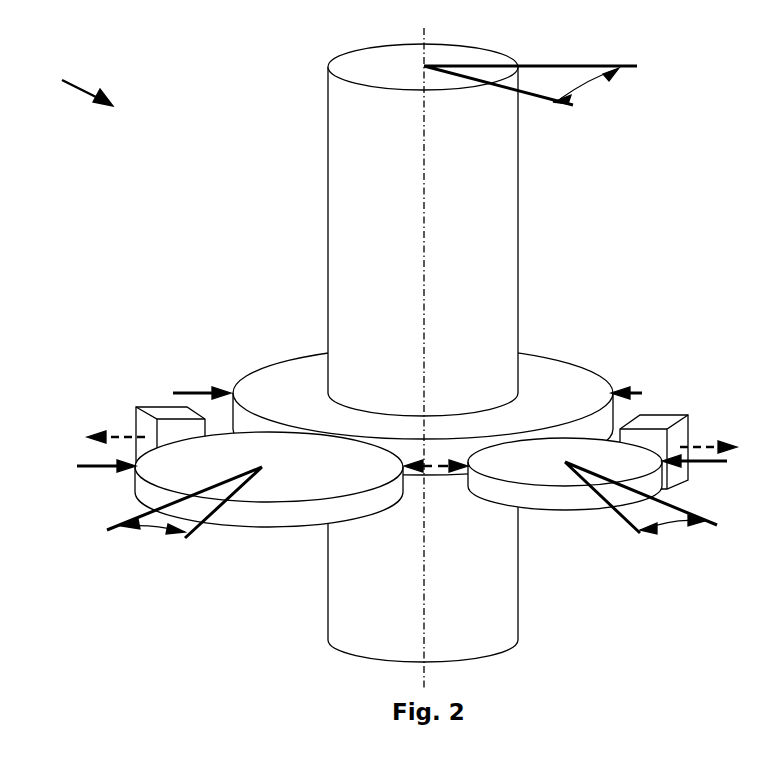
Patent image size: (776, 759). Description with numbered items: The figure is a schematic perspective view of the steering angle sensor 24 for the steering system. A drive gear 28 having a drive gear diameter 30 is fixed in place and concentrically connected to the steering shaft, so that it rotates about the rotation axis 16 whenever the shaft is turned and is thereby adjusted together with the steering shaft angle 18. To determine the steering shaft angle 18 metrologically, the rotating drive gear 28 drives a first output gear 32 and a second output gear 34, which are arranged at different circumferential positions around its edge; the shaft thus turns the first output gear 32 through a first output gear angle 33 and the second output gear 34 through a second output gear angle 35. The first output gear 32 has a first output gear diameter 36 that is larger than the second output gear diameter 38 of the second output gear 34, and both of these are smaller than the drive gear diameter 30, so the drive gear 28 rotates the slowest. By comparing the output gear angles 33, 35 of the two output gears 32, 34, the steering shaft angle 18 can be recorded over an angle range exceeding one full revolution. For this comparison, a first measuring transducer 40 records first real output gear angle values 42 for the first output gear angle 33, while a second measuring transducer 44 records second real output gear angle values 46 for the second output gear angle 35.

The rotation axis 16 is at (424, 680).
The steering shaft angle 18 is at (603, 90).
The steering angle sensor 24 is at (73, 86).
The drive gear 28 is at (285, 357).
The drive gear diameter 30 is at (190, 387).
The first output gear 32 is at (263, 530).
The first output gear angle 33 is at (155, 535).
The second output gear 34 is at (573, 505).
The second output gear angle 35 is at (675, 525).
The first output gear diameter 36 is at (102, 468).
The second output gear diameter 38 is at (710, 463).
The first measuring transducer 40 is at (172, 413).
The first real output gear angle values 42 is at (120, 436).
The second measuring transducer 44 is at (656, 420).
The second real output gear angle values 46 is at (705, 443).